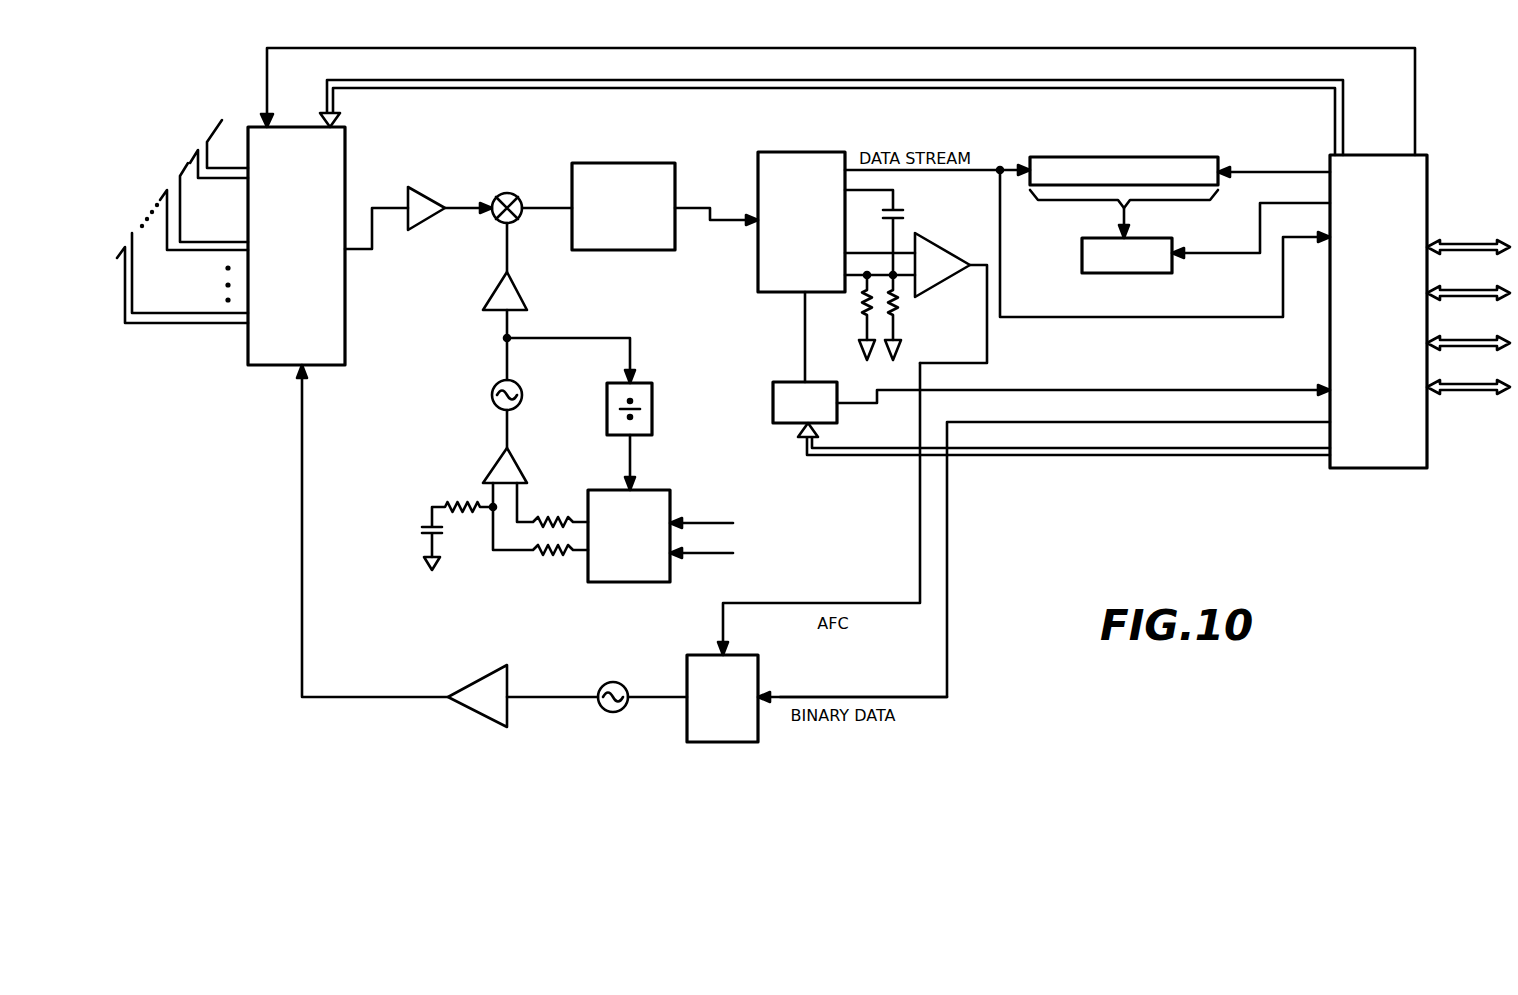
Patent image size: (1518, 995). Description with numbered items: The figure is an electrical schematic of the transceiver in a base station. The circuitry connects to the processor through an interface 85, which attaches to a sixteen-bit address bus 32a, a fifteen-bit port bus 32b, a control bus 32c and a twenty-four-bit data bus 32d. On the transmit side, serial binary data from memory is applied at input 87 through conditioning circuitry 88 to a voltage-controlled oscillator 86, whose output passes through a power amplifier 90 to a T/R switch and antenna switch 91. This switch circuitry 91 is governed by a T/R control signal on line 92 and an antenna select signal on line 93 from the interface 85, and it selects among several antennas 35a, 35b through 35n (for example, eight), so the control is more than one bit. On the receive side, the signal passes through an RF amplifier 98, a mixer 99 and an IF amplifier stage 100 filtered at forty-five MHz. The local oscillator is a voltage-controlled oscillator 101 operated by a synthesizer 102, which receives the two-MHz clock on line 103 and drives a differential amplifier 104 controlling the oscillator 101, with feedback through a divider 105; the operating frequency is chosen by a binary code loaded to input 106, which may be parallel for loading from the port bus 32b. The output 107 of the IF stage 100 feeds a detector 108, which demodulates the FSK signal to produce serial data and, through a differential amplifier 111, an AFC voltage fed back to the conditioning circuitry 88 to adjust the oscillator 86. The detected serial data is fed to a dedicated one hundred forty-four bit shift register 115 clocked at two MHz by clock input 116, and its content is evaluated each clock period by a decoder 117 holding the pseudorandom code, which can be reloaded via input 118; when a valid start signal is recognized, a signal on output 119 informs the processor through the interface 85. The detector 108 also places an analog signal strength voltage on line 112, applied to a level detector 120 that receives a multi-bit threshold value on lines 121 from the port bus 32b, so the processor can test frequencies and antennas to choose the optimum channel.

The interface 85 is at (1375, 470).
The voltage-controlled oscillator 86 is at (612, 682).
The input line for serial binary data 87 is at (835, 697).
The conditioning circuitry 88 is at (722, 745).
The power amplifier 90 is at (478, 716).
The T/R switch and antenna switch 91 is at (347, 325).
The T/R control line 92 is at (620, 47).
The antenna select line 93 is at (522, 90).
The RF amplifier 98 is at (420, 187).
The mixer 99 is at (511, 193).
The IF amplifier stage 100 is at (625, 163).
The voltage-controlled oscillator (local oscillator) 101 is at (492, 395).
The synthesizer 102 is at (670, 501).
The two-MHz clock line 103 is at (700, 557).
The differential amplifier 104 is at (488, 464).
The divider 105 is at (652, 410).
The frequency-select input 106 is at (733, 523).
The IF stage output 107 is at (710, 221).
The detector 108 is at (775, 293).
The differential amplifier 111 is at (937, 246).
The signal strength line 112 is at (802, 362).
The shift register 115 is at (1190, 156).
The clock input 116 is at (1272, 174).
The decoder 117 is at (1082, 256).
The decoder code input 118 is at (1260, 224).
The decoder output 119 is at (1200, 316).
The level detector 120 is at (773, 400).
The threshold level lines 121 is at (1143, 388).
The address bus 32a is at (1450, 240).
The port bus 32b is at (1456, 276).
The control bus 32c is at (1458, 326).
The data bus 32d is at (1452, 380).
The antenna 35a is at (193, 152).
The antenna 35b is at (172, 176).
The antenna 35n is at (137, 240).